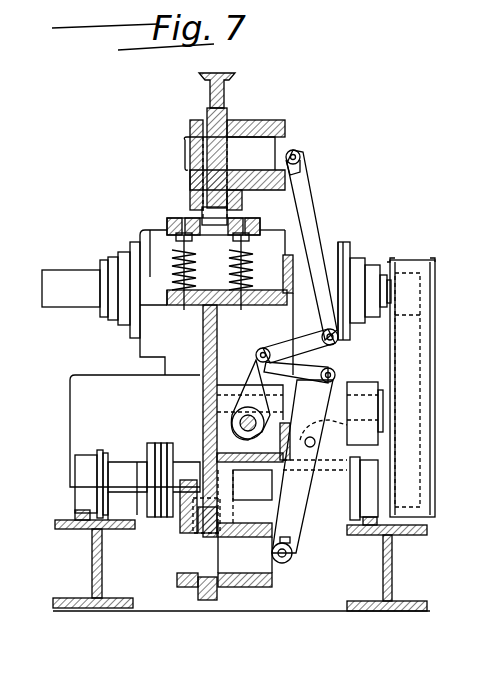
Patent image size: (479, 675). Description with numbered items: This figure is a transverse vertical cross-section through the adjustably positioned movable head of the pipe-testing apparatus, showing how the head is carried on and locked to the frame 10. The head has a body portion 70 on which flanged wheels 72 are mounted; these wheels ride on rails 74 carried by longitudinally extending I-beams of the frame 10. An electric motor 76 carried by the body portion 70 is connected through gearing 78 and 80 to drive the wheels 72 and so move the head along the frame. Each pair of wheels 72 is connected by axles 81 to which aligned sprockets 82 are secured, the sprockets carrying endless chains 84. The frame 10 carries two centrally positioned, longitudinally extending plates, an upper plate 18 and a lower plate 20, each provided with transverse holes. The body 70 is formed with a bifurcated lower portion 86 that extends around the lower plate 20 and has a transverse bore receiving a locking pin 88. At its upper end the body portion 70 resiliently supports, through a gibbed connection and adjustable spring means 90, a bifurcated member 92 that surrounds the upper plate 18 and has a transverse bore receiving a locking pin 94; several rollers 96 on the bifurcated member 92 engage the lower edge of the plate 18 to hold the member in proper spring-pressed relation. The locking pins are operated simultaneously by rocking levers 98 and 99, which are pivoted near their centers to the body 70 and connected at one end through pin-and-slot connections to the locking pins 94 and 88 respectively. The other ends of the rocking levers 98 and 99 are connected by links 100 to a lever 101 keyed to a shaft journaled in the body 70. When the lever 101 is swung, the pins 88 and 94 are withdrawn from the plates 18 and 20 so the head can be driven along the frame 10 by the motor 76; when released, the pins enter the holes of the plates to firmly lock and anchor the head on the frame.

The frame 10 is at (399, 569).
The plate 18 is at (210, 115).
The plate 20 is at (197, 590).
The body portion 70 is at (216, 383).
The flanged wheels 72 is at (80, 497).
The rails 74 is at (75, 514).
The electric motor 76 is at (338, 245).
The gearing 78 is at (423, 360).
The gearing 80 is at (350, 450).
The axles 81 is at (137, 522).
The sprockets 82 is at (168, 458).
The endless chains 84 is at (152, 443).
The bifurcated lower portion 86 is at (180, 527).
The locking pin 88 is at (272, 578).
The adjustable spring means 90 is at (231, 257).
The bifurcated member 92 is at (250, 120).
The locking pin 94 is at (263, 148).
The rollers 96 is at (190, 192).
The rocking lever 98 is at (305, 207).
The rocking lever 99 is at (303, 520).
The links 100 is at (278, 345).
The lever 101 is at (248, 360).